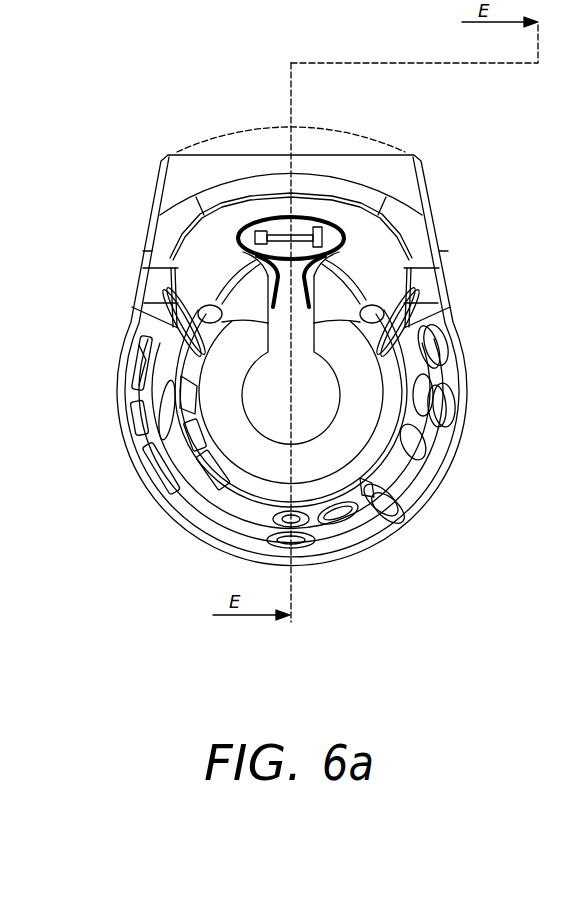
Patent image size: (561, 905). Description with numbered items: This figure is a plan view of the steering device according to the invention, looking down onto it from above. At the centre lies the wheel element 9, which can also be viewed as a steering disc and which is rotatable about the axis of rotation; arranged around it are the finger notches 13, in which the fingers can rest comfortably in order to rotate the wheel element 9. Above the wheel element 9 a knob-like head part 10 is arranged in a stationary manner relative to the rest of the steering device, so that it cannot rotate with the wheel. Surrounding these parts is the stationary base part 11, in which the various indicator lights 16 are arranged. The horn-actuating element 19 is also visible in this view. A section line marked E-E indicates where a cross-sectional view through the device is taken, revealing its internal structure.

The wheel element 9 is at (210, 495).
The head part 10 is at (270, 468).
The base part 11 is at (423, 466).
The finger notches 13 is at (428, 382).
The indicator lights 16 is at (445, 407).
The horn-actuating element 19 is at (432, 237).